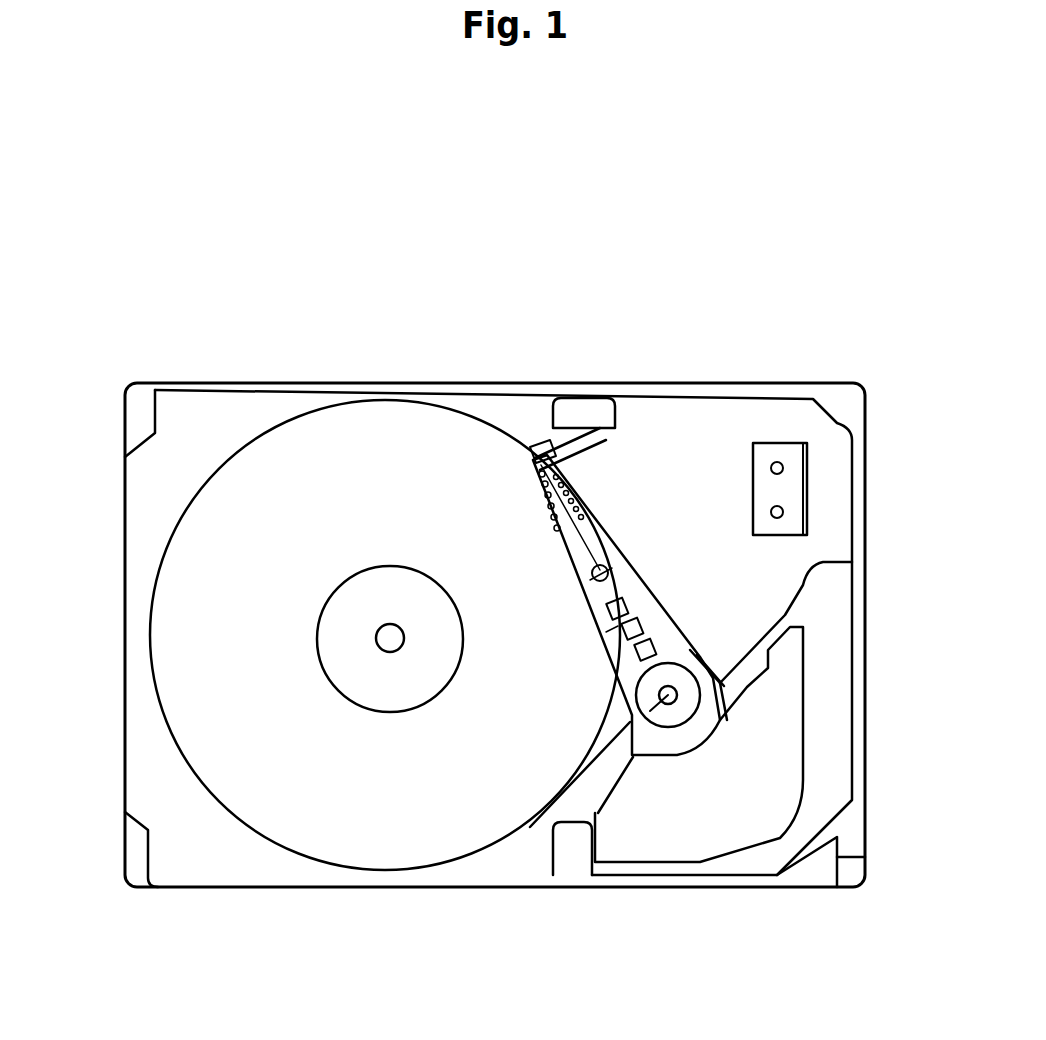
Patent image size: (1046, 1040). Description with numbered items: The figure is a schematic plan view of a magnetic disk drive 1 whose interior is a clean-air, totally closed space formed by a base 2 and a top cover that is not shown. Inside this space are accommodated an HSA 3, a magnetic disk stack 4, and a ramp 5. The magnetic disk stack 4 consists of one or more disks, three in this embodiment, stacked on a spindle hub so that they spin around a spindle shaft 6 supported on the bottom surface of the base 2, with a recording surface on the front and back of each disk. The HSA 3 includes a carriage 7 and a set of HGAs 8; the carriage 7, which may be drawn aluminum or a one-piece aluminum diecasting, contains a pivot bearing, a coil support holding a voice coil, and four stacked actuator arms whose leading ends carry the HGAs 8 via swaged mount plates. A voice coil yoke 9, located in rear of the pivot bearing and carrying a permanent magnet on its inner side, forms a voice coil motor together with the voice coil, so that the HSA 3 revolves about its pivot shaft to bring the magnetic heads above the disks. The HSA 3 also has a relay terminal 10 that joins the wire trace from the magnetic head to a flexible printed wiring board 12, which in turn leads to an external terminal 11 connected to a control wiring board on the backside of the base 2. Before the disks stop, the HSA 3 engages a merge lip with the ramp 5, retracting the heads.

The magnetic disk drive 1 is at (546, 332).
The base 2 is at (857, 660).
The HSA 3 is at (630, 557).
The magnetic disk stack 4 is at (180, 632).
The ramp 5 is at (557, 446).
The spindle shaft 6 is at (390, 638).
The carriage 7 is at (628, 721).
The HGAs 8 is at (600, 507).
The voice coil yoke 9 is at (757, 745).
The relay terminal 10 is at (710, 653).
The external terminal 11 is at (790, 487).
The flexible printed wiring board 12 is at (807, 577).